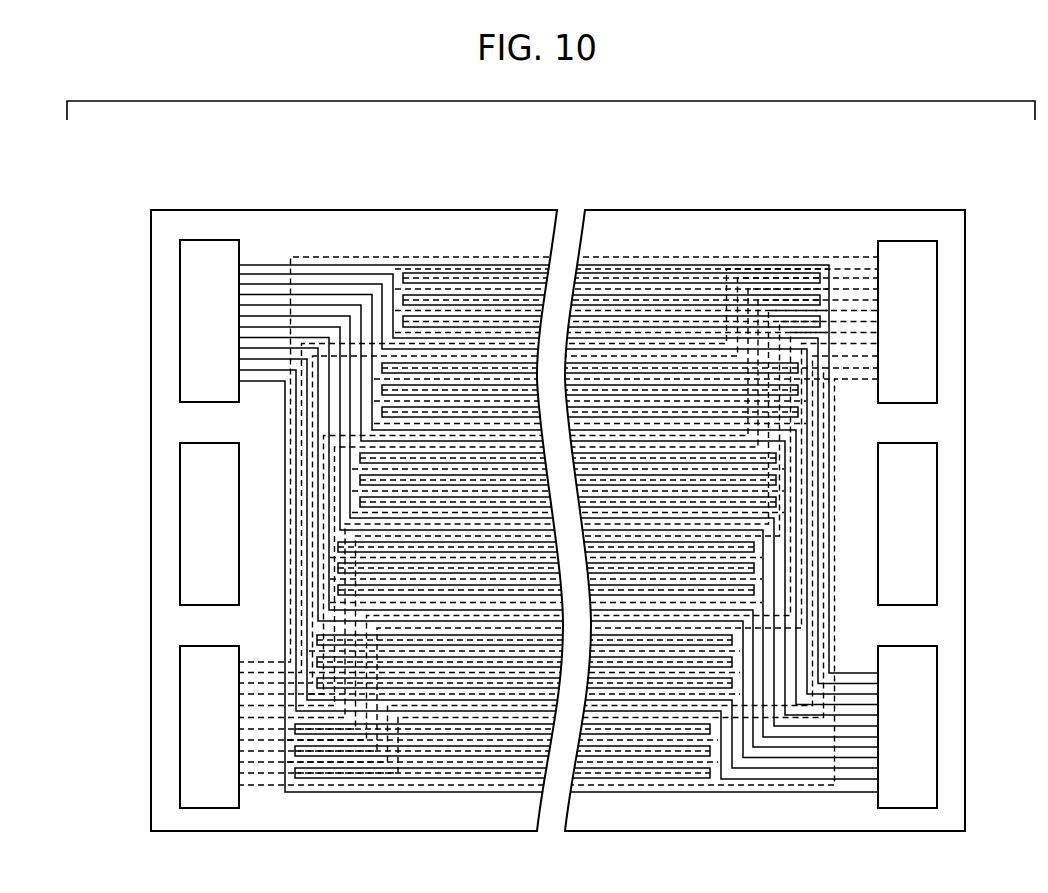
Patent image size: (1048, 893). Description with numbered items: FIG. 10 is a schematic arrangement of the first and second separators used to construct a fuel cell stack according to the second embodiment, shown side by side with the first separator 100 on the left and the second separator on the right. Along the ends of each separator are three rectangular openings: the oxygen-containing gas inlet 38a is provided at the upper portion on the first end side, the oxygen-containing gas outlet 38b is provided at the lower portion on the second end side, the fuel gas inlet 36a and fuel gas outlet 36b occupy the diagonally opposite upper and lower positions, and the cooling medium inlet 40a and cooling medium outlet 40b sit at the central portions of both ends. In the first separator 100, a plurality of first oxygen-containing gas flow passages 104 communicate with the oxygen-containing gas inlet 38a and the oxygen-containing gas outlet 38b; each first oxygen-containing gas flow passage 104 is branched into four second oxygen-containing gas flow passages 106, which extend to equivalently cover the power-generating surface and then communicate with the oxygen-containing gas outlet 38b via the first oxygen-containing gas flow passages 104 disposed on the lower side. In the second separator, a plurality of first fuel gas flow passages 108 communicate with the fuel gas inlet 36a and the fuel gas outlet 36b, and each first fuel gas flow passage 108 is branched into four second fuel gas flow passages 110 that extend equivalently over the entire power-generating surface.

The first separator 100 is at (762, 176).
The first oxygen-containing gas flow passages 104 is at (290, 288).
The second oxygen-containing gas flow passages 106 is at (465, 297).
The first fuel gas flow passages 108 is at (871, 265).
The second fuel gas flow passages 110 is at (658, 265).
The fuel gas inlet 36a is at (986, 328).
The fuel gas outlet 36b is at (205, 718).
The oxygen-containing gas inlet 38a is at (205, 327).
The oxygen-containing gas outlet 38b is at (986, 721).
The cooling medium inlet 40a is at (986, 527).
The cooling medium outlet 40b is at (205, 526).